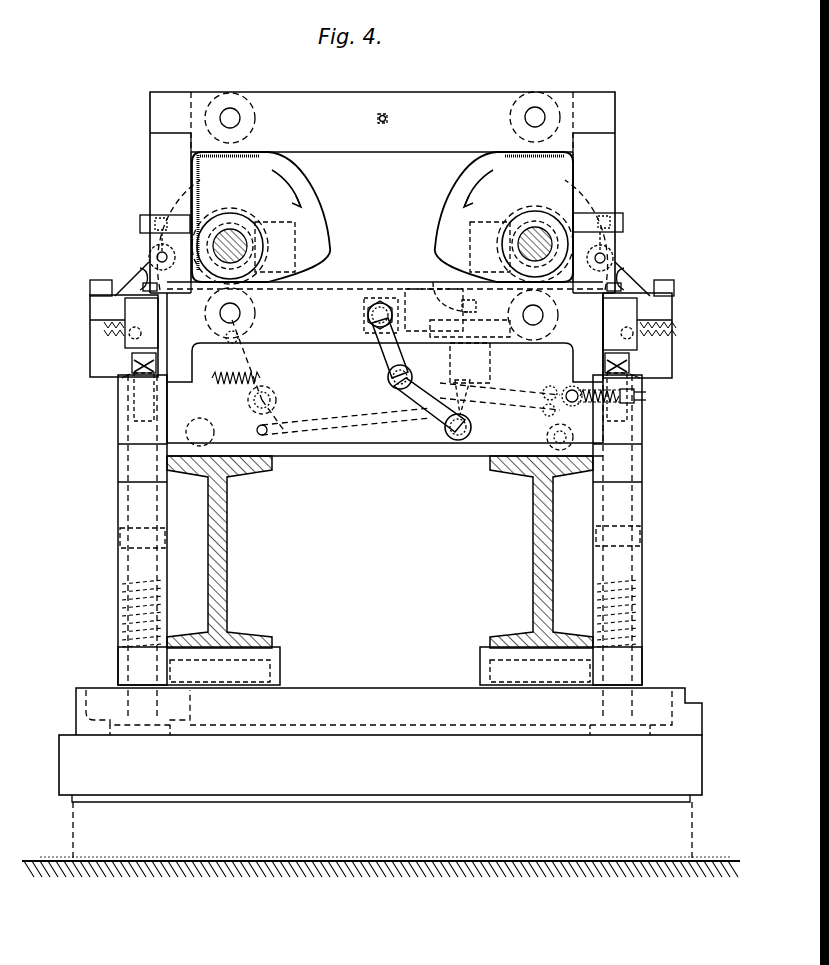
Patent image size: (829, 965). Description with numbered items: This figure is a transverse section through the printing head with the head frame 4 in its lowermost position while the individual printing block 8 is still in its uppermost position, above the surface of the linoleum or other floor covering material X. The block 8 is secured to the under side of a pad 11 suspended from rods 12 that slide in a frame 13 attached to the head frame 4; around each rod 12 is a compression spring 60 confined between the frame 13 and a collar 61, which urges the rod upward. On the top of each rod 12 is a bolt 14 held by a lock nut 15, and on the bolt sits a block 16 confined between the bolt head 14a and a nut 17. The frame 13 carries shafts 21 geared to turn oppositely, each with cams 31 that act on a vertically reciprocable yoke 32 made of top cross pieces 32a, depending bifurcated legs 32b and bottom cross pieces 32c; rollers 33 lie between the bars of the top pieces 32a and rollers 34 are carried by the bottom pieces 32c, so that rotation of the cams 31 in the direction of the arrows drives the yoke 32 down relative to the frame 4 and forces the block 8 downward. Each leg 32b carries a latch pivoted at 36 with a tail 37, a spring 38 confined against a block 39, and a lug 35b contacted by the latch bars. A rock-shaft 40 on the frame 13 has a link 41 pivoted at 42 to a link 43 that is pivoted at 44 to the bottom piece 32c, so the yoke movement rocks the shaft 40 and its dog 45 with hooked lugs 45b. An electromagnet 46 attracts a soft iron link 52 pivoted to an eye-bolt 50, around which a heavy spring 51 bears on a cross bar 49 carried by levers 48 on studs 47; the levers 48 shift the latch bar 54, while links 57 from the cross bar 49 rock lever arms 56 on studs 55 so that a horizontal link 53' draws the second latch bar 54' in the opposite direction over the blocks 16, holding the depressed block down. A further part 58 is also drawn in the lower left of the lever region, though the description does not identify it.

The frame 4 is at (226, 545).
The printing block section 8 is at (380, 768).
The pad 11 is at (389, 691).
The rod 12 is at (130, 432).
The frame structure 13 is at (122, 570).
The bolt 14 is at (134, 367).
The head of the bolt 14a is at (122, 280).
The lock nut 15 is at (132, 380).
The block 16 is at (122, 308).
The nut 17 is at (132, 360).
The shaft 21 is at (230, 238).
The cam 31 is at (306, 182).
The yoke 32 is at (580, 102).
The top cross piece 32a is at (430, 102).
The bifurcated leg 32b is at (633, 187).
The bottom cross piece 32c is at (385, 309).
The cam follower roller 33 is at (238, 105).
The cam follower roller 34 is at (242, 318).
The lug 35b is at (648, 272).
The pivot 36 is at (156, 257).
The tail 37 is at (156, 200).
The compression spring 38 is at (145, 216).
The block 39 is at (140, 226).
The rock-shaft 40 is at (455, 443).
The link 41 is at (442, 425).
The pivot 42 is at (396, 390).
The link 43 is at (392, 352).
The pivot 44 is at (376, 328).
The dog 45 is at (470, 403).
The lug 45b is at (385, 374).
The electromagnet 46 is at (508, 364).
The stud 47 is at (528, 470).
The lever 48 is at (545, 437).
The cross bar 49 is at (537, 417).
The eye-bolt 50 is at (648, 404).
The compression spring 51 is at (602, 412).
The link 52 is at (555, 382).
The horizontal link 53' is at (228, 365).
The latch bar 54 is at (678, 321).
The latch bar 54' is at (337, 326).
The stud 55 is at (266, 392).
The lever arm 56 is at (250, 372).
The link 57 is at (268, 430).
The roller 58 is at (200, 417).
The compression spring 60 is at (130, 610).
The collar 61 is at (122, 540).
The floor covering material X is at (381, 839).